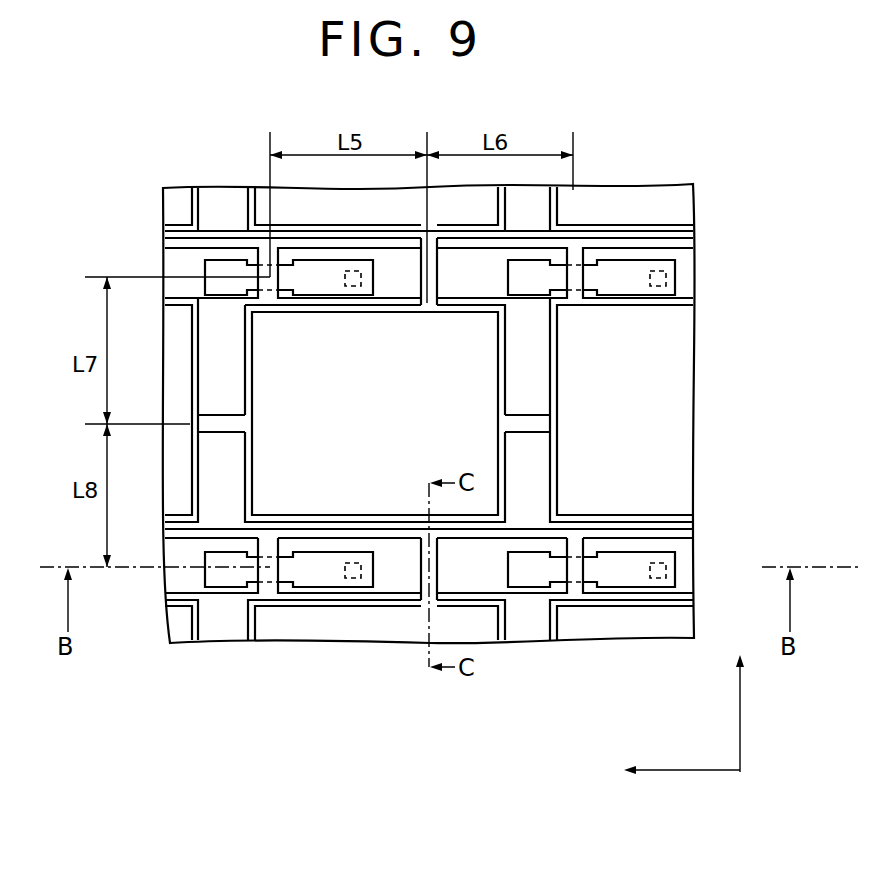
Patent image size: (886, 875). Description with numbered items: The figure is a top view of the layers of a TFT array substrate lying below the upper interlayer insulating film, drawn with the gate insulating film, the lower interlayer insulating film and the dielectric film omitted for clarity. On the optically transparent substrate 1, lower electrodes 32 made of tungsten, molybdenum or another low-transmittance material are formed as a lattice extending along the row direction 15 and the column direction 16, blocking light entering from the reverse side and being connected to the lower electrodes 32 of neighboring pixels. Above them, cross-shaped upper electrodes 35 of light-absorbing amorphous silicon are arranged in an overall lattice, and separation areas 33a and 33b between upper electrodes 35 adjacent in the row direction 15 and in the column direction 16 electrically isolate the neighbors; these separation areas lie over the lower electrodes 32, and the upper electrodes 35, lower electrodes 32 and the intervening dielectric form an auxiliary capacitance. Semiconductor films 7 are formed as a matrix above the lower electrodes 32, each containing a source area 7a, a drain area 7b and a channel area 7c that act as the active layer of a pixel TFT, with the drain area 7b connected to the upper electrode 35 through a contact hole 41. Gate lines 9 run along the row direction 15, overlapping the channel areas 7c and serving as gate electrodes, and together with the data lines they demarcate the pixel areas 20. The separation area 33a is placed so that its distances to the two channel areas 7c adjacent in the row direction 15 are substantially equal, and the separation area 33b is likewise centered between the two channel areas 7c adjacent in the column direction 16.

The optically transparent substrate 1 is at (658, 622).
The semiconductor film 7 is at (222, 273).
The source area 7a is at (222, 577).
The drain area 7b is at (320, 575).
The channel area 7c is at (267, 592).
The gate line 9 is at (673, 238).
The row direction 15 is at (688, 772).
The column direction 16 is at (745, 705).
The pixel area 20 is at (460, 385).
The lower electrode 32 is at (249, 190).
The separation area 33a is at (433, 233).
The separation area 33b is at (189, 427).
The upper electrode 35 is at (225, 628).
The contact hole 41 is at (665, 272).